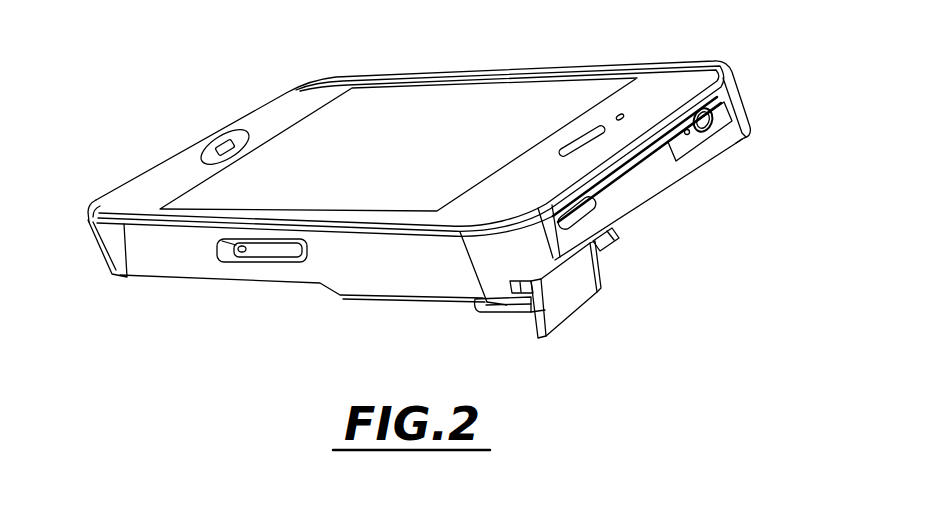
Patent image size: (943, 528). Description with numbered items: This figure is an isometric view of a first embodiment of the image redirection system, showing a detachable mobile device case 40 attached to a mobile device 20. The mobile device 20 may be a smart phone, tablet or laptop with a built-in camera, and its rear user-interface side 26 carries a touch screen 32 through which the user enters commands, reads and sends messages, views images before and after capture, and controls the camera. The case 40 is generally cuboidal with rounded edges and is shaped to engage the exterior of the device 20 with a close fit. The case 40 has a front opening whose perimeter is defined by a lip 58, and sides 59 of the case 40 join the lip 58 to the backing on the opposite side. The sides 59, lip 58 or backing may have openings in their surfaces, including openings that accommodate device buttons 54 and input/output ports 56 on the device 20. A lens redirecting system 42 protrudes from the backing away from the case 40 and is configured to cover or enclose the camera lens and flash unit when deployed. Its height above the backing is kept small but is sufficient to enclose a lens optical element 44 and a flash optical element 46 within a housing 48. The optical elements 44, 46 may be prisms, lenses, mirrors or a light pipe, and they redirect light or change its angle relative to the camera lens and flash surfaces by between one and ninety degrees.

The mobile device 20 is at (144, 201).
The rear user-interface side 26 is at (298, 104).
The touch screen 32 is at (466, 106).
The detachable mobile device case 40 is at (737, 64).
The input/output port 56 is at (712, 118).
The device button 54 is at (586, 207).
The flash optical element 46 is at (606, 238).
The lens optical element 44 is at (565, 287).
The housing 48 is at (528, 318).
The lens redirecting system 42 is at (452, 320).
The lip 58 is at (126, 270).
The sides 59 is at (331, 263).